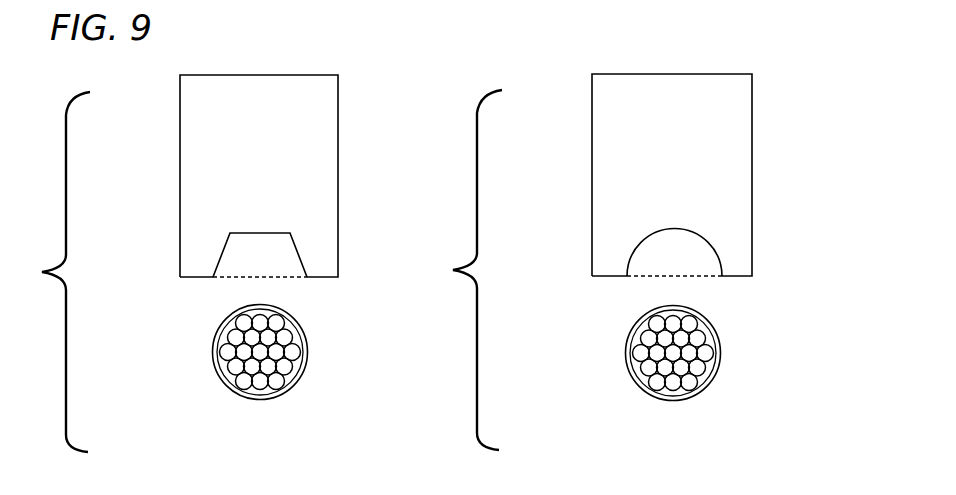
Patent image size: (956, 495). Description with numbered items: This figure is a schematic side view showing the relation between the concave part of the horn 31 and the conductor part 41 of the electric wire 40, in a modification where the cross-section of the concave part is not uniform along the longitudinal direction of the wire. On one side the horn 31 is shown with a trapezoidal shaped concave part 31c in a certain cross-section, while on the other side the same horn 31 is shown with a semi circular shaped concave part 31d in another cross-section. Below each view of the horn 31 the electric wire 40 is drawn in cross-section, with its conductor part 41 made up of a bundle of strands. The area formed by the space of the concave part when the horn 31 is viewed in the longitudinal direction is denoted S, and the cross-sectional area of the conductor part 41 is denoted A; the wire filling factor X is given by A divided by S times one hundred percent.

The horn 31 is at (328, 128).
The trapezoidal shaped concave part 31c is at (263, 236).
The semi circular shaped concave part 31d is at (673, 229).
The electric wire 40 is at (307, 350).
The conductor part 41 is at (226, 350).
The area formed by the space S is at (467, 261).
The cross-sectional area of the conductor part A is at (290, 378).